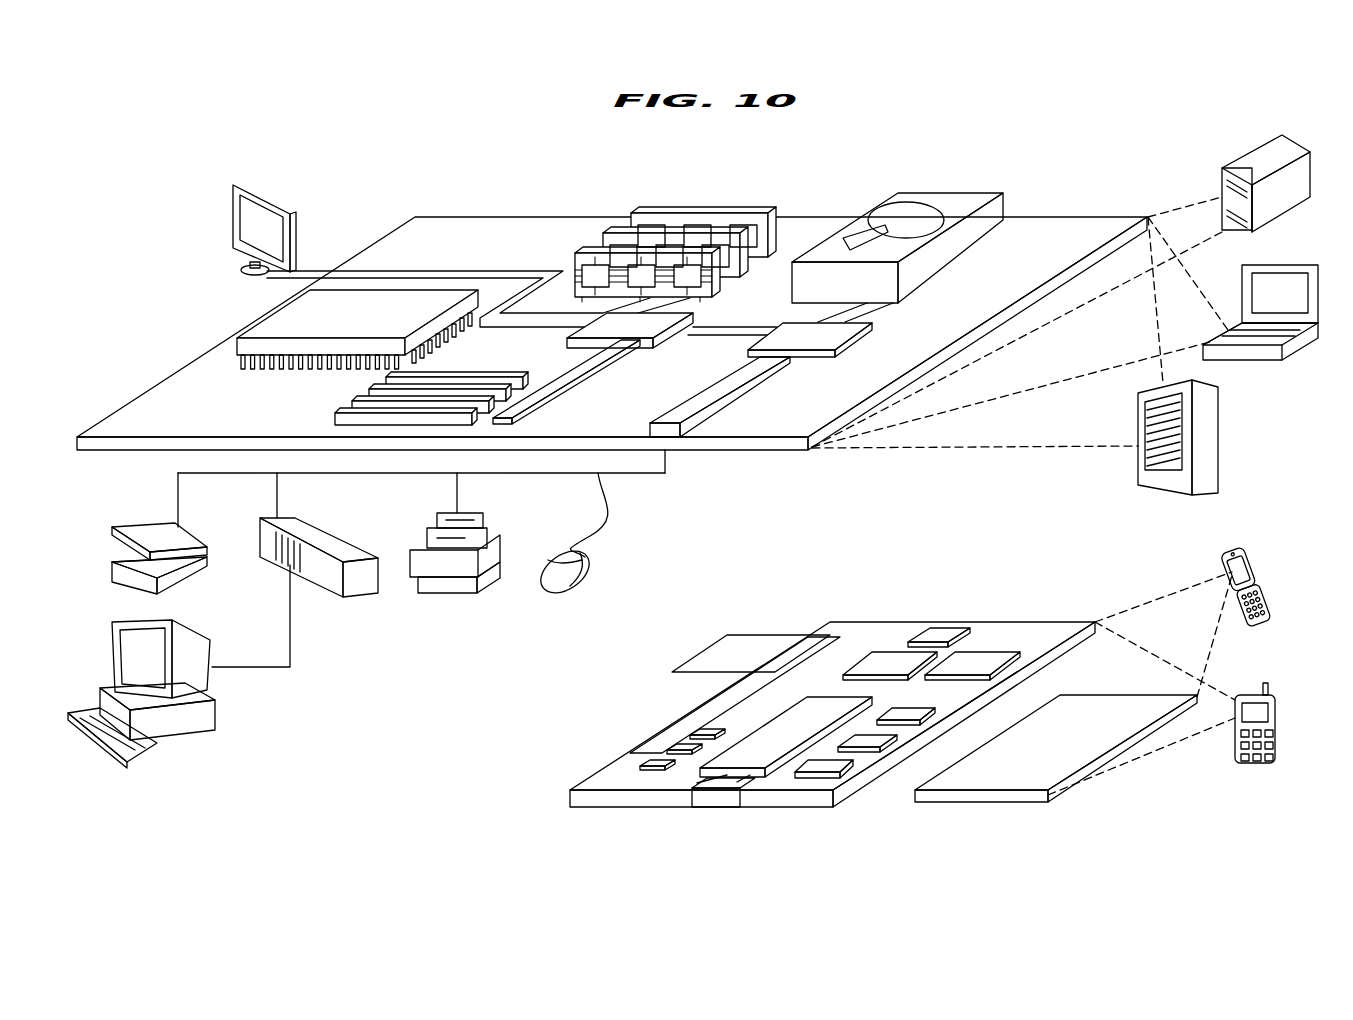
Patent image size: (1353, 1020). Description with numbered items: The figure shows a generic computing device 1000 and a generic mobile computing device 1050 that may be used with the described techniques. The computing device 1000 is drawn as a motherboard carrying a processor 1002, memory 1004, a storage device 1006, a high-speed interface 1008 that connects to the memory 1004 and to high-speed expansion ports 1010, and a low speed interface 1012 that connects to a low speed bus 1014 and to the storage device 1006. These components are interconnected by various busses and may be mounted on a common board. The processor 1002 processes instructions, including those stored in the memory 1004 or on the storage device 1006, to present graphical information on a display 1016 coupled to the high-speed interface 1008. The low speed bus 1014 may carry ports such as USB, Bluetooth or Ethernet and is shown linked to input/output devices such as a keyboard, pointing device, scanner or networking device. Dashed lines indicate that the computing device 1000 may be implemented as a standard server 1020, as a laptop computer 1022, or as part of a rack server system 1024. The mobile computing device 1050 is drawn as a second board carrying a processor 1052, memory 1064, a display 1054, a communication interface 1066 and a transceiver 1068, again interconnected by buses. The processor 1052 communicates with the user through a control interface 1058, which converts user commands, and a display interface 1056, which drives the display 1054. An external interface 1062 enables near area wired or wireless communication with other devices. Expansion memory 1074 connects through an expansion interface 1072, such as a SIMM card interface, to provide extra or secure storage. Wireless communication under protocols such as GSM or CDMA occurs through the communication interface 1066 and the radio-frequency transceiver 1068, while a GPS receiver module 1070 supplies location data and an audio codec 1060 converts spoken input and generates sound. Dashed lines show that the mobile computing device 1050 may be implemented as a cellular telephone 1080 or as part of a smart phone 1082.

The computing device 1000 is at (364, 163).
The processor 1002 is at (260, 320).
The memory 1004 is at (707, 208).
The storage device 1006 is at (938, 192).
The high-speed interface 1008 is at (641, 325).
The high-speed expansion ports 1010 is at (360, 398).
The low speed interface 1012 is at (783, 333).
The low speed bus 1014 is at (670, 423).
The display 1016 is at (238, 184).
The standard server 1020 is at (1243, 164).
The laptop computer 1022 is at (1297, 263).
The rack server system 1024 is at (1220, 438).
The mobile computer device 1050 is at (525, 817).
The processor 1052 is at (757, 743).
The display 1054 is at (1095, 708).
The display interface 1056 is at (843, 770).
The control interface 1058 is at (873, 740).
The audio codec 1060 is at (912, 712).
The external interface 1062 is at (717, 793).
The memory 1064 is at (670, 745).
The communication interface 1066 is at (890, 653).
The transceiver 1068 is at (980, 657).
The GPS receiver module 1070 is at (940, 630).
The expansion interface 1072 is at (812, 635).
The expansion memory 1074 is at (730, 635).
The cellular telephone 1080 is at (1240, 547).
The smart phone 1082 is at (1252, 695).